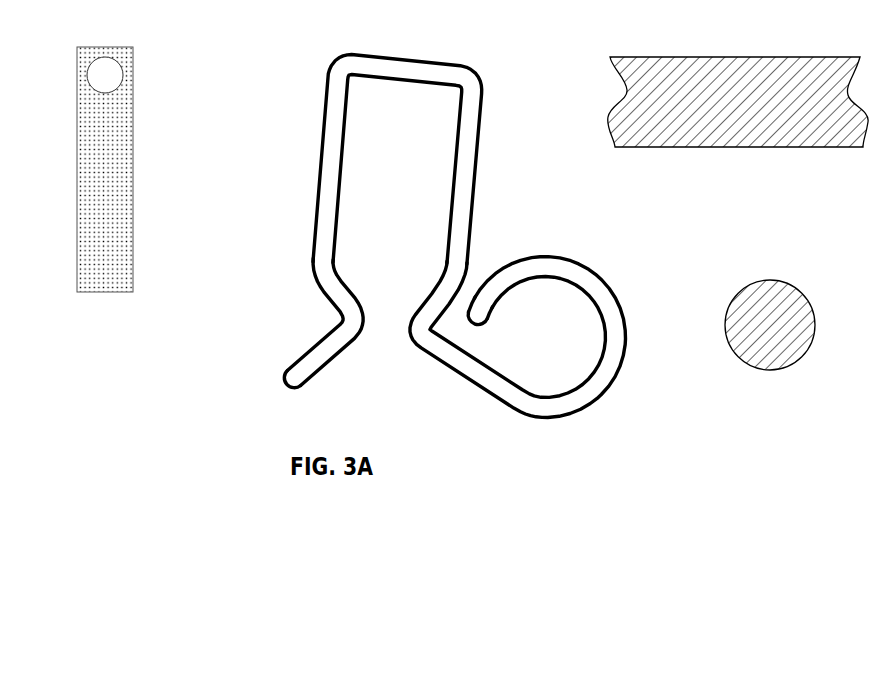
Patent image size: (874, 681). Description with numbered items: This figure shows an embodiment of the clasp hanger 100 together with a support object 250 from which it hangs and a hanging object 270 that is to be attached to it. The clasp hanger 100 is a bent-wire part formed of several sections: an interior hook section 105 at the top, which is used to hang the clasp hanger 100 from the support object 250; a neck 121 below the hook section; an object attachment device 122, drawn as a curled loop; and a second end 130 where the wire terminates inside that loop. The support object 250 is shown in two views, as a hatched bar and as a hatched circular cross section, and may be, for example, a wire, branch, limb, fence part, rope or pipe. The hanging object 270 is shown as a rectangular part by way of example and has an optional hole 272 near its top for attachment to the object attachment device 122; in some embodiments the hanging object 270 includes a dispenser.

The clasp hanger 100 is at (425, 236).
The interior hook section 105 is at (418, 152).
The neck 121 is at (403, 376).
The object attachment device 122 is at (599, 277).
The second end 130 is at (475, 325).
The support object 250 is at (770, 281).
The hanging object 270 is at (77, 180).
The hole 272 is at (111, 57).